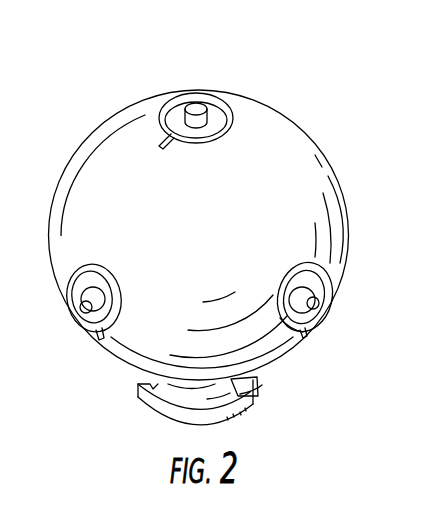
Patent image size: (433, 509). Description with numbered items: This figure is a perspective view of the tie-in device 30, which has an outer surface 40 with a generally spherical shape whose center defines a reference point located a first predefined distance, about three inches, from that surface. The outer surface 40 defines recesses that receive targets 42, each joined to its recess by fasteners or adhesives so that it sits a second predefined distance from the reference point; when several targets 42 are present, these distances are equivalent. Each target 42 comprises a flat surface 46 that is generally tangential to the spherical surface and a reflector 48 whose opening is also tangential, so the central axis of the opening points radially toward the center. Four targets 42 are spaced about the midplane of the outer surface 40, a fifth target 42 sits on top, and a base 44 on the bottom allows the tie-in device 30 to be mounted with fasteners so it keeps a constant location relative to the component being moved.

The tie-in device 30 is at (268, 129).
The outer surface 40 is at (182, 239).
The target 42 is at (213, 108).
The base 44 is at (244, 410).
The flat surface 46 is at (173, 118).
The reflector 48 is at (195, 109).